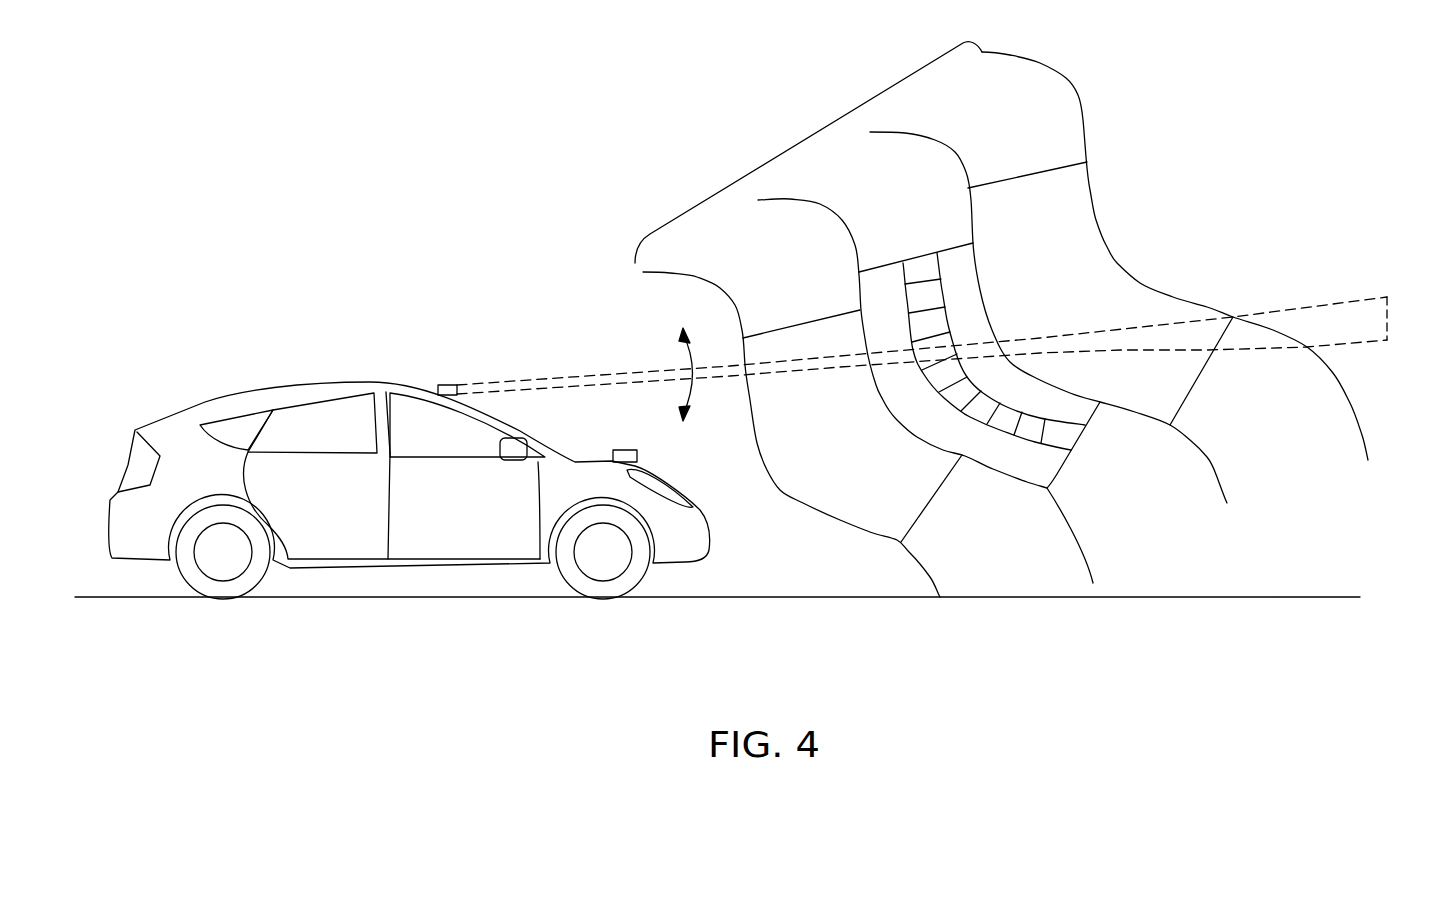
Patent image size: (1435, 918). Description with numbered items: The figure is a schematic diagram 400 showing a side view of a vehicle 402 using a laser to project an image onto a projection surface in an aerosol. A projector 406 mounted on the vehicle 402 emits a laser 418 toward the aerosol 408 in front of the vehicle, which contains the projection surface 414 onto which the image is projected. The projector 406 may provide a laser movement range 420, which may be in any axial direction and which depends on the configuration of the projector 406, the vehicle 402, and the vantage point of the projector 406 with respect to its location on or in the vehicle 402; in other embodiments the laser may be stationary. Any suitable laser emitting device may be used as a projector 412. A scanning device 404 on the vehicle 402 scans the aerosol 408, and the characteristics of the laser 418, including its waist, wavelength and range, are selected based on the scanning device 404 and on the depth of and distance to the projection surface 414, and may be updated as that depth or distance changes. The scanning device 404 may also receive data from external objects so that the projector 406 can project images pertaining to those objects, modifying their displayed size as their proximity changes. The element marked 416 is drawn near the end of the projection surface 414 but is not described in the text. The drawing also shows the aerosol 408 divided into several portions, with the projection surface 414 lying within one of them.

The schematic diagram 400 is at (280, 118).
The vehicle 402 is at (236, 400).
The scanning device 404 is at (627, 449).
The projector 406 is at (447, 384).
The aerosol 408 is at (807, 137).
The projector 412 is at (886, 541).
The projection surface 414 is at (910, 258).
The end edge of strip 416 is at (1048, 460).
The laser 418 is at (540, 378).
The laser movement range 420 is at (697, 393).